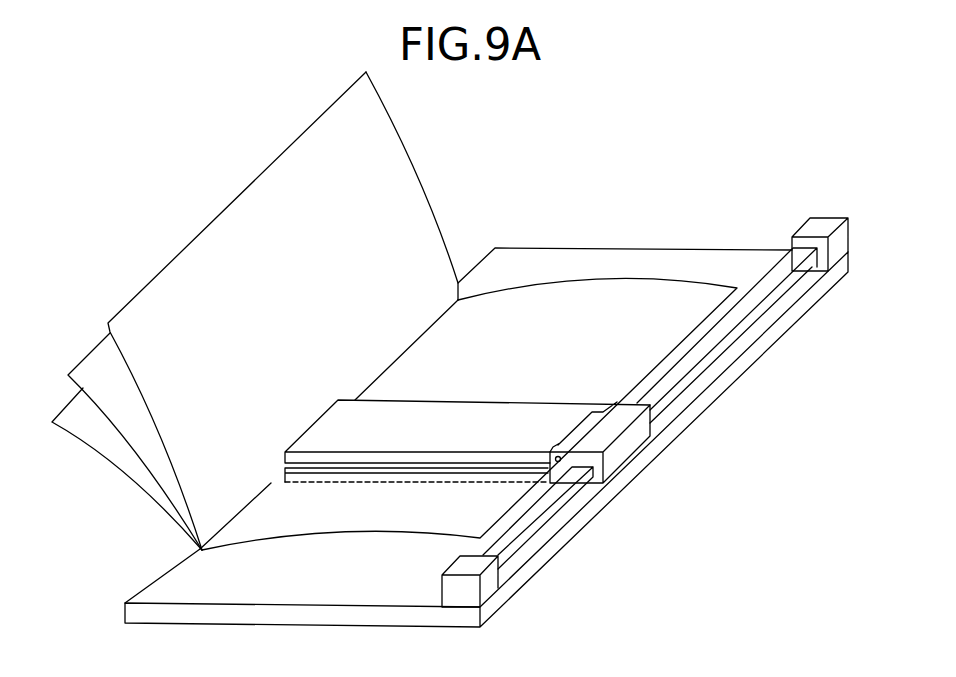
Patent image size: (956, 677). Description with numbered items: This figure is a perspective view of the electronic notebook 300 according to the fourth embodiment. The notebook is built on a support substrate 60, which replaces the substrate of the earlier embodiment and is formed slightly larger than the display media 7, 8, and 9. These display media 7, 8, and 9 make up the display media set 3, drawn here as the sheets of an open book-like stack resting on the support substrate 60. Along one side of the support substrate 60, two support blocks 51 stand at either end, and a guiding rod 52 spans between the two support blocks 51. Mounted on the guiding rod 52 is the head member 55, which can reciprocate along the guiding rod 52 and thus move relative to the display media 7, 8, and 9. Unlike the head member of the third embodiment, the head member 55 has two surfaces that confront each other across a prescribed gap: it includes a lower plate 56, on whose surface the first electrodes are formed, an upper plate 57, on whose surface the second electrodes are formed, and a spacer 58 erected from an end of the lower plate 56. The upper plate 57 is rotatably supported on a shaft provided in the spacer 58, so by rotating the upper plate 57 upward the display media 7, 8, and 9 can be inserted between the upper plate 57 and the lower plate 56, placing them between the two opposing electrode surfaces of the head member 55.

The electronic notebook 300 is at (375, 311).
The display media set 3 is at (375, 311).
The display medium 7 is at (132, 312).
The display medium 8 is at (101, 370).
The display medium 9 is at (115, 449).
The support block 51 is at (486, 584).
The guiding rod 52 is at (770, 302).
The head member 55 is at (487, 425).
The lower plate 56 is at (444, 480).
The upper plate 57 is at (412, 408).
The spacer 58 is at (621, 450).
The support substrate 60 is at (708, 400).